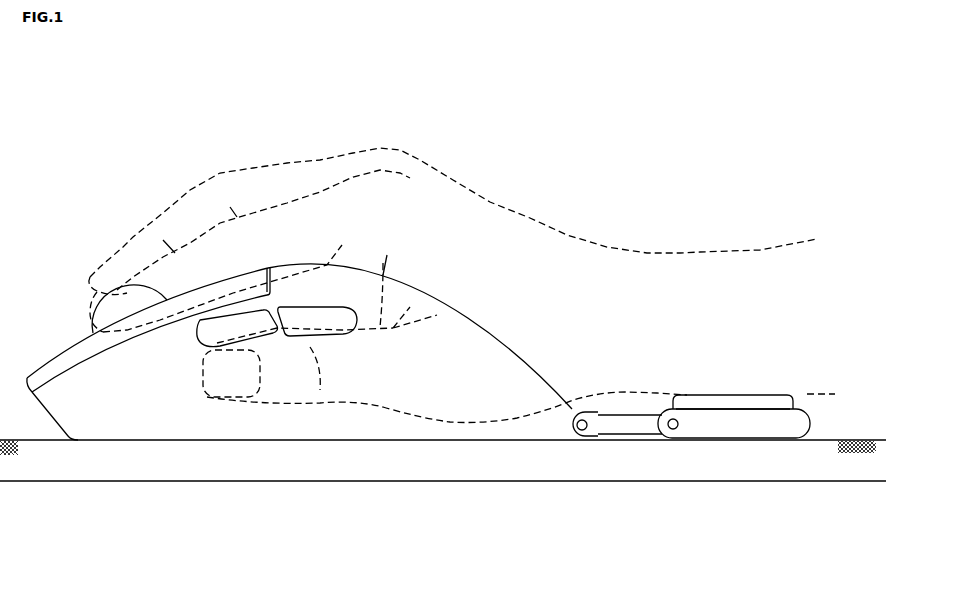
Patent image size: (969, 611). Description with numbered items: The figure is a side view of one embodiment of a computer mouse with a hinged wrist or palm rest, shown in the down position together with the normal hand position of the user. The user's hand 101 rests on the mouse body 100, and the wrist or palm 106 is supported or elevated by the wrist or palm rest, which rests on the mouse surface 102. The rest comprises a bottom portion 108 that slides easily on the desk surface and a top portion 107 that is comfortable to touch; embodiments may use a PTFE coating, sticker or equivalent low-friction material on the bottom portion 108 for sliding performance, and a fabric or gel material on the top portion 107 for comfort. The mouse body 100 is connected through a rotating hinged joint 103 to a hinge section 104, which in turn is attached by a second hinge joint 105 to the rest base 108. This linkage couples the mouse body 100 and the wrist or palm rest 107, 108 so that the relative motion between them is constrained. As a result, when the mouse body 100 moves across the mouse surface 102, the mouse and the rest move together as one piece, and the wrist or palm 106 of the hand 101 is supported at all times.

The mouse body 100 is at (131, 388).
The user's hand 101 is at (405, 220).
The mouse surface 102 is at (148, 461).
The rotating hinged joint 103 is at (578, 432).
The hinge section 104 is at (630, 425).
The second hinge joint 105 is at (677, 432).
The wrist or palm 106 is at (688, 395).
The top portion 107 is at (728, 401).
The bottom portion 108 is at (764, 423).